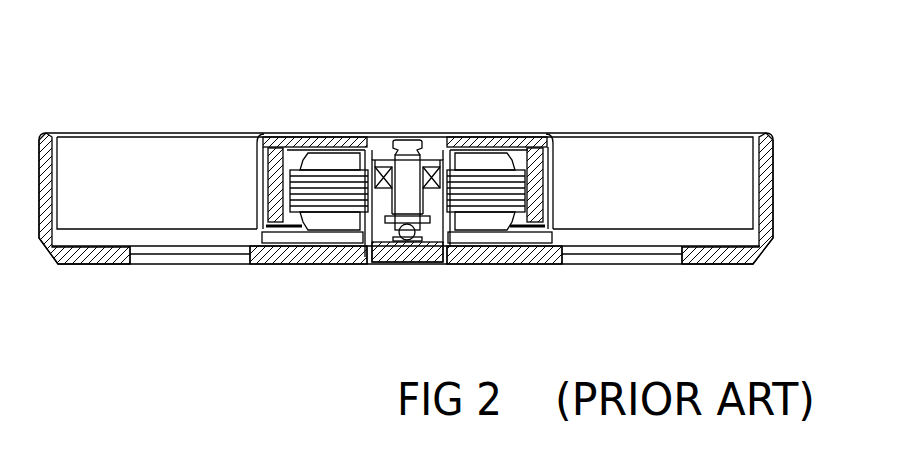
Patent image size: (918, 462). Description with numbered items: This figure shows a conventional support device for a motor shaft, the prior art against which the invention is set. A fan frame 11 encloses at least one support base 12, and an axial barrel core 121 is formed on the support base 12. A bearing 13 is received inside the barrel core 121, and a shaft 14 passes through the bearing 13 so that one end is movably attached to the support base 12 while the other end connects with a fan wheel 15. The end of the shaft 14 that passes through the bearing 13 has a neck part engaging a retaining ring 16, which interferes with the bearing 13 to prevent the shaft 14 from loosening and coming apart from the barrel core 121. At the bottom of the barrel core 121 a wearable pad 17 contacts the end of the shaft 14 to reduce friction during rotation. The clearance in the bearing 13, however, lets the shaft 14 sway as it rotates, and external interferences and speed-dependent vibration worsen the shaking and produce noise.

The fan frame 11 is at (760, 132).
The support base 12 is at (507, 260).
The axial barrel core 121 is at (360, 134).
The bearing 13 is at (470, 134).
The shaft 14 is at (427, 134).
The fan wheel 15 is at (412, 134).
The retaining ring 16 is at (447, 255).
The wearable pad 17 is at (395, 256).